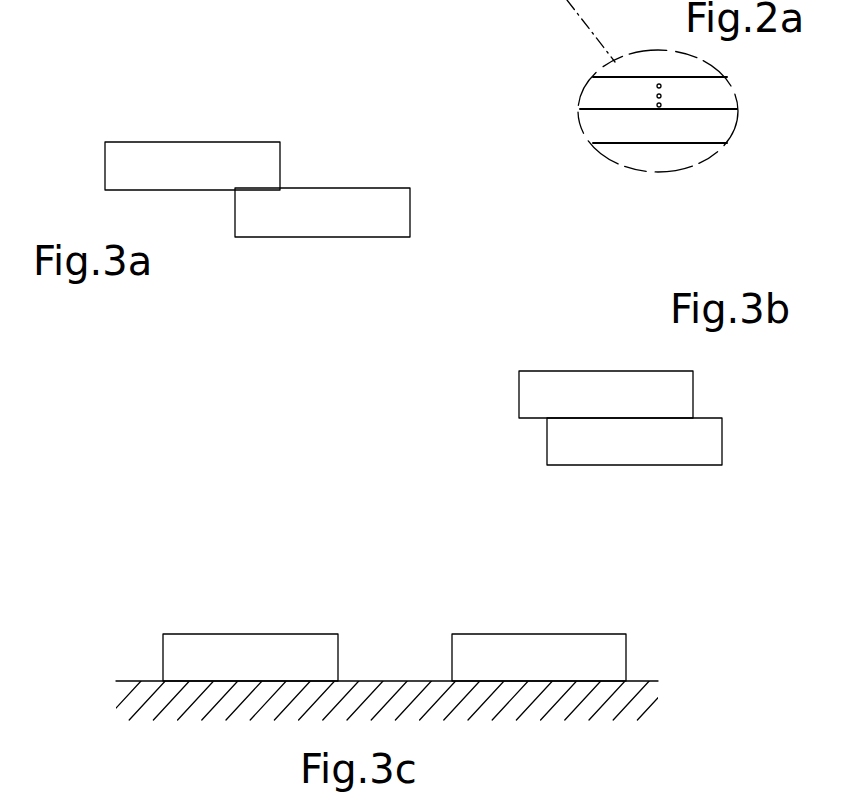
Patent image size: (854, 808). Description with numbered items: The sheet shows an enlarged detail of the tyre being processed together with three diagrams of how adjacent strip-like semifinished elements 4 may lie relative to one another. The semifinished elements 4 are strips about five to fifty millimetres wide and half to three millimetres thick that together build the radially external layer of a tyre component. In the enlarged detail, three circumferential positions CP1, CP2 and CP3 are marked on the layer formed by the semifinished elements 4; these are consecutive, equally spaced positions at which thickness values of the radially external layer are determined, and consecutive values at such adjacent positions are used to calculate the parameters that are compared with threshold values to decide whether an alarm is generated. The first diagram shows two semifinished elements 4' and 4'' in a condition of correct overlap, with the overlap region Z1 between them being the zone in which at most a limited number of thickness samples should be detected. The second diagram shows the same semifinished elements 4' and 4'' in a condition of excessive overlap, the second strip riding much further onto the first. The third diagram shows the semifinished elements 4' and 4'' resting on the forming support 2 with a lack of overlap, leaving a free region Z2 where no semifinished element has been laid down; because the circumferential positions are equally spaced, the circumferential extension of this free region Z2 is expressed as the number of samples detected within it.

In FIG. 3C, the forming support 2 is at (132, 670).
In FIG. 2A, the semifinished elements 4 is at (689, 112).
In FIG. 3A, the semifinished elements 4 is at (271, 135).
In FIG. 3B, the semifinished elements 4 is at (551, 418).
In FIG. 3C, the semifinished elements 4 is at (394, 585).
In FIG. 3A, the semifinished element 4' is at (192, 111).
In FIG. 3B, the semifinished element 4' is at (606, 363).
In FIG. 3C, the semifinished element 4' is at (250, 597).
In FIG. 3A, the semifinished element 4'' is at (336, 162).
In FIG. 3B, the semifinished element 4'' is at (634, 473).
In FIG. 3C, the semifinished element 4'' is at (539, 613).
In FIG. 3A, the overlap region Z1 is at (260, 195).
In FIG. 3C, the free region Z2 is at (392, 678).
In FIG. 2A, the circumferential position CP1 is at (656, 86).
In FIG. 2A, the circumferential position CP2 is at (656, 96).
In FIG. 2A, the circumferential position CP3 is at (656, 105).